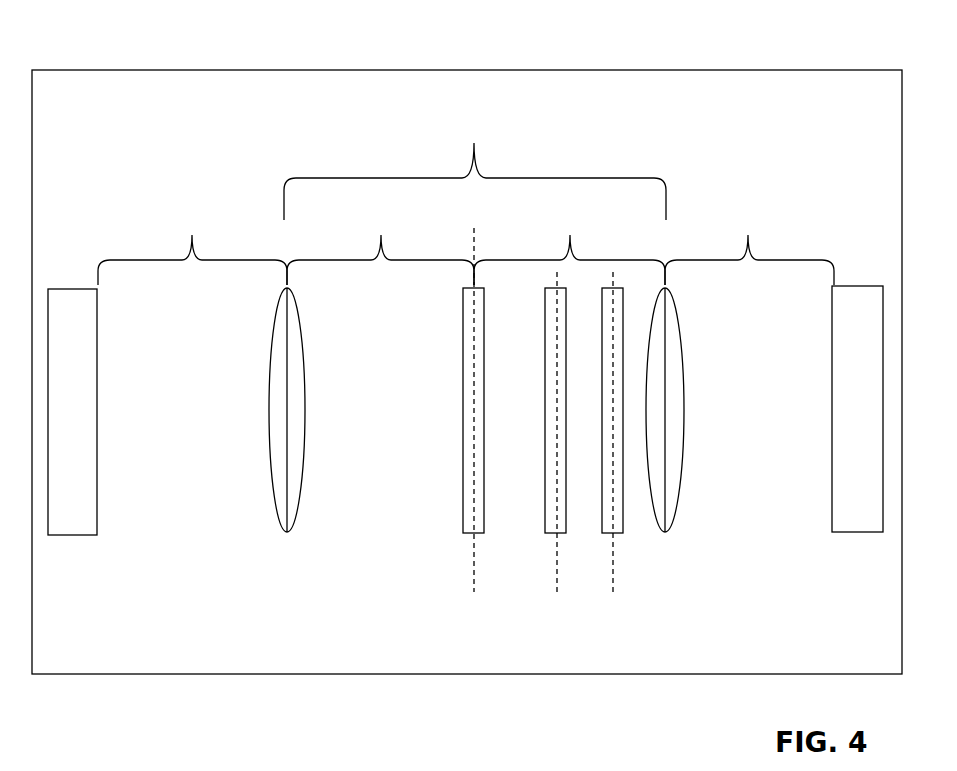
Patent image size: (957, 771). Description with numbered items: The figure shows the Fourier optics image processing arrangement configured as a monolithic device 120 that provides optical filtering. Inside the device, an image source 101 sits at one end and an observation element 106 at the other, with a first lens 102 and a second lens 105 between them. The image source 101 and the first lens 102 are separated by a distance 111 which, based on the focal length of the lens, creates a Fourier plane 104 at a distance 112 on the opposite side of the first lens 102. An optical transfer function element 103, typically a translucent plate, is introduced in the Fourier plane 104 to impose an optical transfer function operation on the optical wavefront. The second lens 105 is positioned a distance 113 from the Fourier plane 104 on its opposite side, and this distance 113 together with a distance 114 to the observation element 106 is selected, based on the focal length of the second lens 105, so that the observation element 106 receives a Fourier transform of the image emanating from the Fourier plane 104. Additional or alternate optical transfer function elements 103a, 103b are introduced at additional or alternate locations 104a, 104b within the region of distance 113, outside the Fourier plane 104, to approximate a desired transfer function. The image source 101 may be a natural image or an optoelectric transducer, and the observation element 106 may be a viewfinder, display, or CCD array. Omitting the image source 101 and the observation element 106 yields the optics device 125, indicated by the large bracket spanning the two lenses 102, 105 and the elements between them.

The monolithic device 120 is at (112, 70).
The optics device 125 is at (475, 166).
The distance 111 is at (192, 248).
The distance 112 is at (380, 248).
The distance 113 is at (569, 248).
The distance 114 is at (749, 248).
The image source 101 is at (92, 313).
The observation element 106 is at (878, 311).
The first lens 102 is at (294, 545).
The second lens 105 is at (681, 523).
The optical transfer function element 103 is at (458, 534).
The optical transfer function element 103a is at (568, 540).
The optical transfer function element 103b is at (629, 537).
The Fourier plane 104 is at (477, 419).
The location 104a is at (562, 443).
The location 104b is at (622, 443).